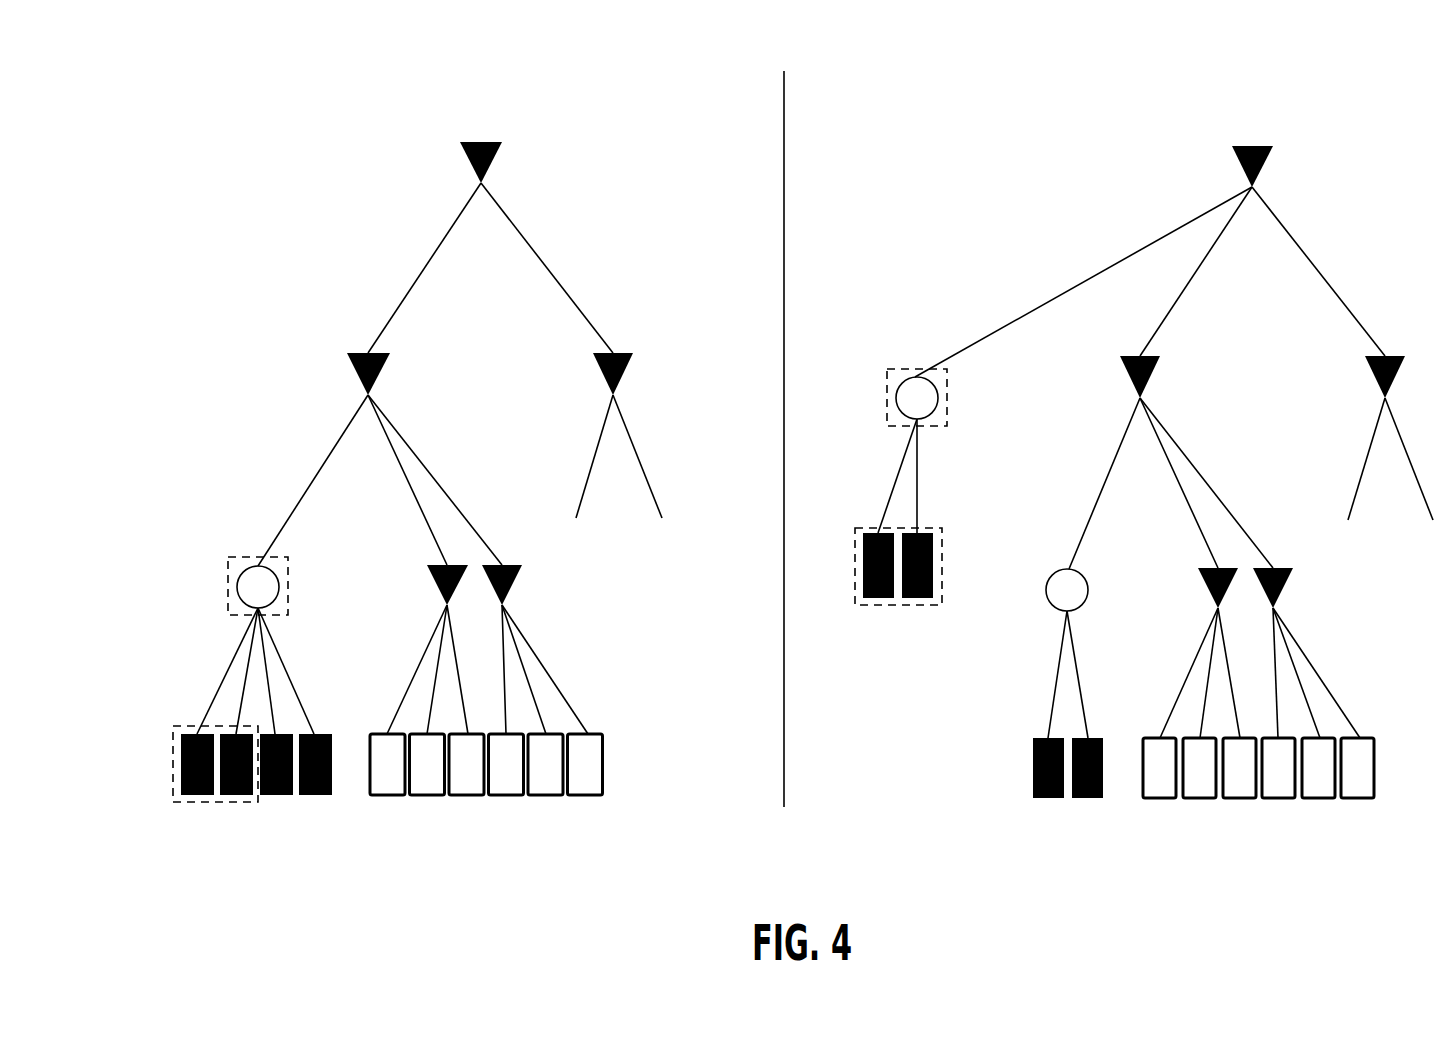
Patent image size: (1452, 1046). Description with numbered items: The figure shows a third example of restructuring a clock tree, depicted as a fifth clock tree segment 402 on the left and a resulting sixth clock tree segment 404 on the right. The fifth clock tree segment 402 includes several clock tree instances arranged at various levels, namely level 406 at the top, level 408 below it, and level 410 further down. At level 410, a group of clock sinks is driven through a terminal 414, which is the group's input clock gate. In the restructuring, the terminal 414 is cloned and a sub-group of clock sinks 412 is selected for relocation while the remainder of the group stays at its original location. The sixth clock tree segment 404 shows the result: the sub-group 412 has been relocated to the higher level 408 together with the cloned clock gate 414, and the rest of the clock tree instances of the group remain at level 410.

The fifth clock tree segment 402 is at (262, 53).
The sixth clock tree segment 404 is at (976, 53).
The level 406 is at (417, 165).
The level 408 is at (293, 365).
The level 410 is at (235, 621).
The sub-group of clock sinks 412 is at (218, 793).
The terminal 414 is at (305, 587).